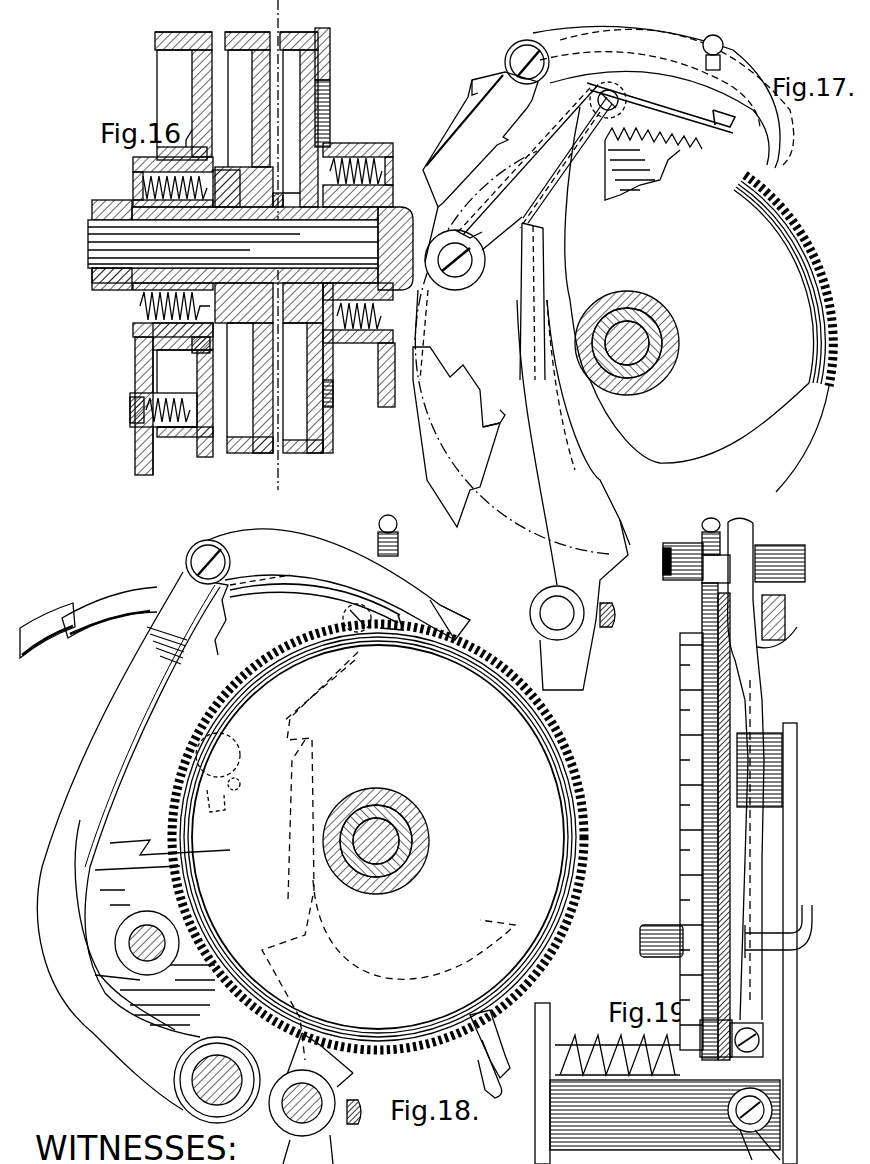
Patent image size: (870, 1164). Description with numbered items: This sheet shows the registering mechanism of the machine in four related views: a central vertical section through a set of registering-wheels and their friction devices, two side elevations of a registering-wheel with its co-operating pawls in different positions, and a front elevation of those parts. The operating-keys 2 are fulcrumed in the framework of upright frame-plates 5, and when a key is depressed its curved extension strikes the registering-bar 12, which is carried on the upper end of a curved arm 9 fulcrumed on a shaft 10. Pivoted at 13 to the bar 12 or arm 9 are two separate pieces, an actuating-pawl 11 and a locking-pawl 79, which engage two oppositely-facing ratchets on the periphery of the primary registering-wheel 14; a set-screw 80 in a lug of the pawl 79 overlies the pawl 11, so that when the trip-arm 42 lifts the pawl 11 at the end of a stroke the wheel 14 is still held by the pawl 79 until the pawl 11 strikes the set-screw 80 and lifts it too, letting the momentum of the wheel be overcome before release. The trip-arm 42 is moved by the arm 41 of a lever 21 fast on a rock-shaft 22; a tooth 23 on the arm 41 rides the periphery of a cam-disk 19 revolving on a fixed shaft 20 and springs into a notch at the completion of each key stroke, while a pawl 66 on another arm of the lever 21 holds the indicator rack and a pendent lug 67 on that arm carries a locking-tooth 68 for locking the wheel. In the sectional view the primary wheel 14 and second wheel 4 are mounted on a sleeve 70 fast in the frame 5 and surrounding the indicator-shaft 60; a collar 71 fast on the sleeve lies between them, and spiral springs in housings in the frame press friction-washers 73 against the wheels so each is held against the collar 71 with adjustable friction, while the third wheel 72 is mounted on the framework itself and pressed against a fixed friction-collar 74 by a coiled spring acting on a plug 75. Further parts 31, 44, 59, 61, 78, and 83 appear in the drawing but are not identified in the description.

In FIG. 18, the operating-keys 2 is at (88, 622).
In FIG. 16, the second wheel 4 is at (244, 242).
In FIG. 16, the upright frame-plates 5 is at (135, 462).
In FIG. 19, the upright frame-plates 5 is at (797, 780).
In FIG. 17, the curved arm 9 is at (482, 210).
In FIG. 18, the curved arm 9 is at (132, 841).
In FIG. 19, the curved arm 9 is at (772, 655).
In FIG. 18, the shaft 10 is at (238, 1068).
In FIG. 17, the actuating-pawl 11 is at (735, 125).
In FIG. 18, the actuating-pawl 11 is at (316, 597).
In FIG. 19, the actuating-pawl 11 is at (690, 582).
In FIG. 17, the registering-bar 12 is at (472, 88).
In FIG. 18, the pivot 13 is at (230, 560).
In FIG. 16, the primary registering-wheel 14 is at (298, 242).
In FIG. 17, the primary registering-wheel 14 is at (622, 330).
In FIG. 18, the primary registering-wheel 14 is at (378, 846).
In FIG. 19, the primary registering-wheel 14 is at (703, 725).
In FIG. 17, the cam-disk 19 is at (456, 437).
In FIG. 18, the cam-disk 19 is at (162, 932).
In FIG. 18, the fixed shaft 20 is at (130, 950).
In FIG. 19, the fixed shaft 20 is at (640, 955).
In FIG. 17, the lever 21 is at (573, 495).
In FIG. 18, the lever 21 is at (313, 1098).
In FIG. 17, the rock-shaft 22 is at (572, 613).
In FIG. 18, the rock-shaft 22 is at (283, 1118).
In FIG. 17, the tooth 23 is at (500, 420).
In FIG. 19, the spring 31 is at (575, 1035).
In FIG. 17, the arm 41 is at (546, 250).
In FIG. 17, the trip-arm 42 is at (535, 160).
In FIG. 17, the pin 44 is at (618, 106).
In FIG. 18, the pin 44 is at (350, 618).
In FIG. 16, the collar 59 is at (92, 284).
In FIG. 16, the indicator-shaft 60 is at (88, 244).
In FIG. 17, the indicator-shaft 60 is at (640, 343).
In FIG. 18, the indicator-shaft 60 is at (395, 850).
In FIG. 16, the end cap 61 is at (413, 212).
In FIG. 19, the pawl 66 is at (812, 937).
In FIG. 18, the pendent lug 67 is at (500, 1082).
In FIG. 18, the locking-tooth 68 is at (505, 1058).
In FIG. 19, the locking-tooth 68 is at (716, 1038).
In FIG. 16, the sleeve 70 is at (92, 210).
In FIG. 17, the sleeve 70 is at (655, 322).
In FIG. 18, the sleeve 70 is at (410, 832).
In FIG. 16, the collar 71 is at (286, 195).
In FIG. 17, the collar 71 is at (665, 310).
In FIG. 18, the collar 71 is at (410, 812).
In FIG. 16, the third wheel 72 is at (183, 96).
In FIG. 16, the friction-washer 73 is at (222, 176).
In FIG. 16, the fixed friction-collar 74 is at (210, 347).
In FIG. 16, the plug 75 is at (197, 406).
In FIG. 16, the ratchet ring 78 is at (330, 48).
In FIG. 17, the ratchet ring 78 is at (605, 180).
In FIG. 18, the ratchet ring 78 is at (580, 745).
In FIG. 19, the ratchet ring 78 is at (730, 712).
In FIG. 17, the locking-pawl 79 is at (775, 165).
In FIG. 18, the locking-pawl 79 is at (488, 612).
In FIG. 19, the locking-pawl 79 is at (753, 526).
In FIG. 17, the set-screw 80 is at (723, 45).
In FIG. 18, the set-screw 80 is at (397, 522).
In FIG. 19, the set-screw 80 is at (718, 520).
In FIG. 16, the bracket 83 is at (236, 23).
In FIG. 19, the bracket 83 is at (691, 841).